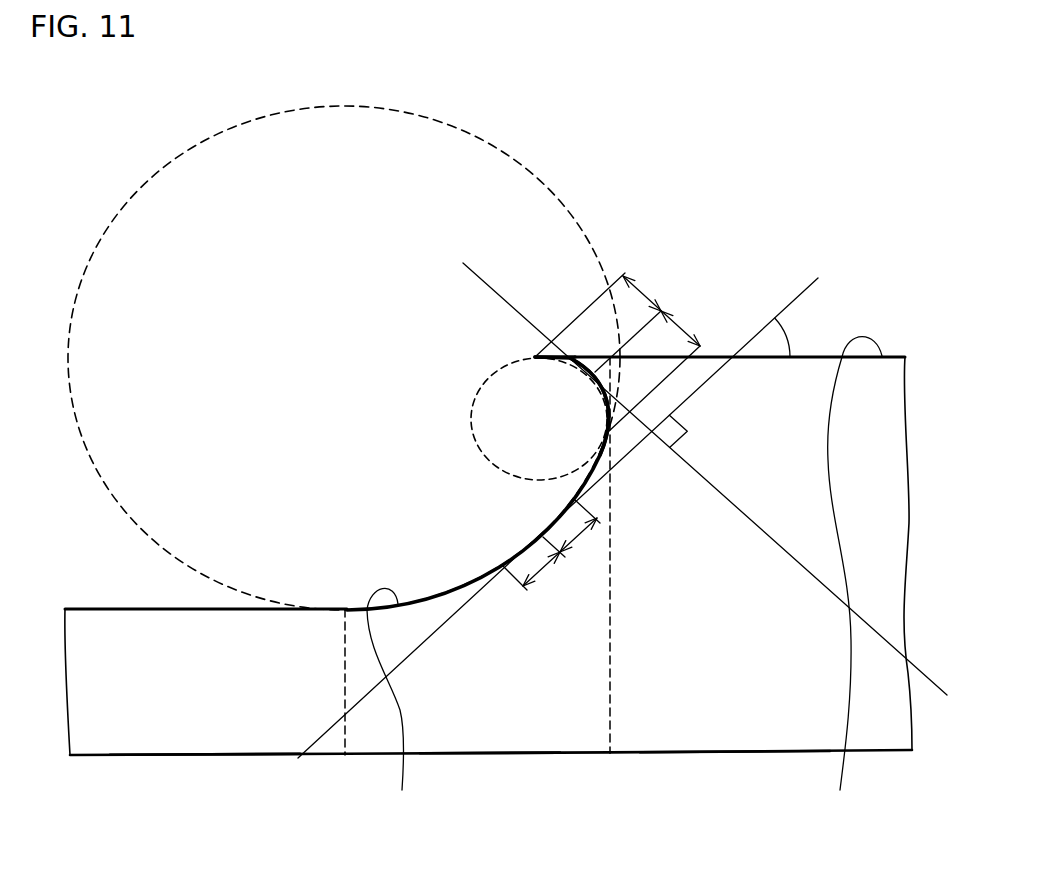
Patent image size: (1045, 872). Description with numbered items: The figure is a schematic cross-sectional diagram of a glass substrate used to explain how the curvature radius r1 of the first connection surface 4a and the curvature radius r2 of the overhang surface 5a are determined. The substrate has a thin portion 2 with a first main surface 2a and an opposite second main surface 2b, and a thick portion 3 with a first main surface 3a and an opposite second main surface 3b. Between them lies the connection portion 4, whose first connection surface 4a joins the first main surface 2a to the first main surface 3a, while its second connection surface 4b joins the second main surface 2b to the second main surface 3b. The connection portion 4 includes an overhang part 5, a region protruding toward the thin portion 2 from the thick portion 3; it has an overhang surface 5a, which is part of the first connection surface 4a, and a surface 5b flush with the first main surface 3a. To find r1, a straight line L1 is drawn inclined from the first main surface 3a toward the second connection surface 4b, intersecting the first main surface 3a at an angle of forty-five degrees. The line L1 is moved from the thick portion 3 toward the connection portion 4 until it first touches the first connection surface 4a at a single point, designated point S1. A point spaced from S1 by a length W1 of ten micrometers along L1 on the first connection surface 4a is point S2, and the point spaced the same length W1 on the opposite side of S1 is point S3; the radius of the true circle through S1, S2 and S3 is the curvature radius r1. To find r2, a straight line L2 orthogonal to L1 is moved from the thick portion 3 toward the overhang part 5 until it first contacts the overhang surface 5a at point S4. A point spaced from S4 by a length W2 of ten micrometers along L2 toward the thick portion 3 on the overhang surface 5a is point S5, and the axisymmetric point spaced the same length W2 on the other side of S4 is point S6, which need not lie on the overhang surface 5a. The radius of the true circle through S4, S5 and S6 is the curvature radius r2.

The thin portion 2 is at (133, 710).
The first main surface 2a is at (102, 609).
The second main surface 2b is at (203, 757).
The thick portion 3 is at (773, 702).
The first main surface 3a is at (855, 580).
The second main surface 3b is at (712, 752).
The connection portion 4 is at (557, 703).
The first connection surface 4a is at (391, 706).
The second connection surface 4b is at (492, 752).
The overhang part 5 is at (600, 373).
The overhang surface 5a is at (565, 357).
The surface 5b is at (597, 355).
The straight line L1 is at (576, 508).
The straight line L2 is at (694, 463).
The length W1 is at (557, 550).
The length W2 is at (626, 350).
The curvature radius r1 is at (347, 360).
The curvature radius r2 is at (540, 420).
The point S1 is at (529, 523).
The point S2 is at (489, 554).
The point S3 is at (557, 495).
The point S4 is at (581, 389).
The point S5 is at (592, 427).
The point S6 is at (529, 373).